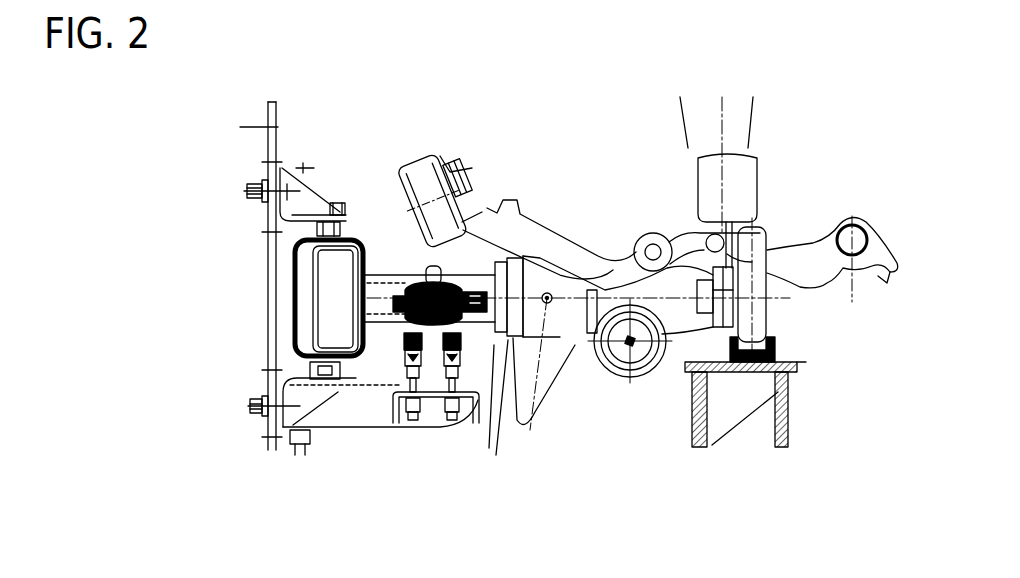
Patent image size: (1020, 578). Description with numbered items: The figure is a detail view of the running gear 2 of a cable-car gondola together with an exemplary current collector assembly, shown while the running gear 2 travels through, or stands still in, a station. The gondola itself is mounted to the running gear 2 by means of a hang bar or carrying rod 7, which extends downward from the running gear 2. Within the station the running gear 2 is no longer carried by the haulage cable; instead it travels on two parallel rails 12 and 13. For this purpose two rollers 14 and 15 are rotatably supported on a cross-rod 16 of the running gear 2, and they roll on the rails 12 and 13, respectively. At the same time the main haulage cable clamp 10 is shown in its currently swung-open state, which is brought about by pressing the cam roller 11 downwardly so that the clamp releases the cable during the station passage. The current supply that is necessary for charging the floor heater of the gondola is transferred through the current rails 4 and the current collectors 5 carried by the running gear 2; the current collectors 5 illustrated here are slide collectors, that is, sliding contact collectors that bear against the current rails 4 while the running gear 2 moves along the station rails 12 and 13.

The running gear 2 is at (613, 248).
The current rails 4 is at (410, 357).
The current collectors 5 is at (515, 340).
The carrying rod 7 is at (563, 430).
The main haulage cable clamp 10 is at (872, 223).
The cam roller 11 is at (425, 157).
The rail 12 is at (788, 375).
The rail 13 is at (305, 300).
The roller 14 is at (763, 325).
The roller 15 is at (322, 268).
The cross-rod 16 is at (383, 270).